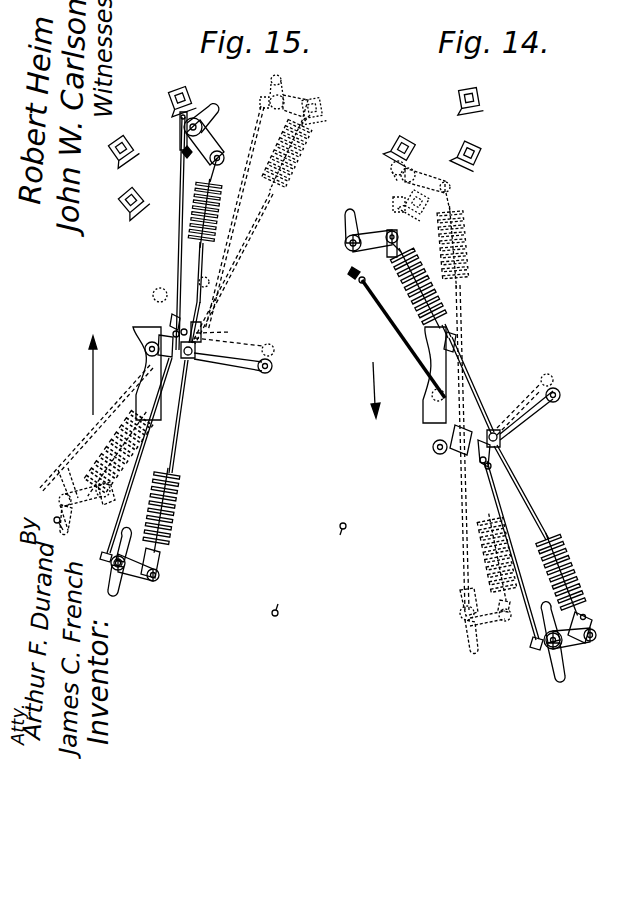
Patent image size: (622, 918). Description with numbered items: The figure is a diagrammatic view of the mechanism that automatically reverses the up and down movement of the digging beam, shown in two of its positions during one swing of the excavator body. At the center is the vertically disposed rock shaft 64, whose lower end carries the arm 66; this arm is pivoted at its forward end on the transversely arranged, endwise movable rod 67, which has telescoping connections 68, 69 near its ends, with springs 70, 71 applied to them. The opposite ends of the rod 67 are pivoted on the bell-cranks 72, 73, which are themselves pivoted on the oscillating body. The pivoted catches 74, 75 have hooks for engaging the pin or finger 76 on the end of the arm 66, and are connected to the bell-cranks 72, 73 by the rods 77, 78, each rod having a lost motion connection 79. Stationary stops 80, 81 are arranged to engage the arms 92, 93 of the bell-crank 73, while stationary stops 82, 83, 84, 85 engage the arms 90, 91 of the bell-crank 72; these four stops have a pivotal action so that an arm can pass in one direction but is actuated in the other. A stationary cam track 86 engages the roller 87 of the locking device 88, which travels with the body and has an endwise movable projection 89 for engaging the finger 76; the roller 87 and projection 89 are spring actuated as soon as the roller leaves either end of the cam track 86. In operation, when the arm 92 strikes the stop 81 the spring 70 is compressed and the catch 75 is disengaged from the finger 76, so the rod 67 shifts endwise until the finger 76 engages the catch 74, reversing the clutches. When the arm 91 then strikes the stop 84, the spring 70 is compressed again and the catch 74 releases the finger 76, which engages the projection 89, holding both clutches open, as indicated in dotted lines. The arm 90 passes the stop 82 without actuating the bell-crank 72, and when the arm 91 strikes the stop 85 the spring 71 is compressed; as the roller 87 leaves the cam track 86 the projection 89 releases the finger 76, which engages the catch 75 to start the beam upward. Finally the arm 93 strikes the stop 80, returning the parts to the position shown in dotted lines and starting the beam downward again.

In FIG. 15, the rock shaft 64 is at (266, 373).
In FIG. 15, the arm 66 is at (243, 363).
In FIG. 15, the rod 67 is at (203, 318).
In FIG. 14, the rod 67 is at (456, 340).
In FIG. 15, the telescoping connection 68 is at (252, 181).
In FIG. 14, the telescoping connection 68 is at (418, 270).
In FIG. 15, the telescoping connection 69 is at (152, 496).
In FIG. 14, the telescoping connection 69 is at (540, 556).
In FIG. 15, the spring 70 is at (137, 467).
In FIG. 14, the spring 70 is at (512, 583).
In FIG. 15, the spring 71 is at (226, 193).
In FIG. 14, the spring 71 is at (415, 252).
In FIG. 15, the bell-crank 72 is at (210, 139).
In FIG. 14, the bell-crank 72 is at (370, 236).
In FIG. 15, the bell-crank 73 is at (147, 566).
In FIG. 14, the bell-crank 73 is at (575, 646).
In FIG. 15, the pivoted catch 74 is at (181, 151).
In FIG. 14, the pivoted catch 74 is at (394, 232).
In FIG. 15, the pivoted catch 75 is at (181, 376).
In FIG. 14, the pivoted catch 75 is at (487, 447).
In FIG. 15, the pin 76 is at (205, 340).
In FIG. 14, the pin 76 is at (479, 381).
In FIG. 15, the rod 77 is at (201, 257).
In FIG. 14, the rod 77 is at (426, 314).
In FIG. 15, the rod 78 is at (116, 425).
In FIG. 14, the rod 78 is at (464, 521).
In FIG. 15, the lost motion connection 79 is at (82, 437).
In FIG. 14, the lost motion connection 79 is at (360, 282).
In FIG. 15, the stationary stop 80 is at (53, 531).
In FIG. 14, the stationary stop 80 is at (342, 536).
In FIG. 15, the stationary stop 81 is at (279, 604).
In FIG. 14, the stationary stop 81 is at (587, 618).
In FIG. 15, the stationary stop 82 is at (129, 152).
In FIG. 14, the stationary stop 82 is at (413, 141).
In FIG. 15, the stationary stop 83 is at (190, 101).
In FIG. 14, the stationary stop 83 is at (480, 100).
In FIG. 15, the stationary stop 84 is at (134, 199).
In FIG. 14, the stationary stop 84 is at (451, 192).
In FIG. 15, the stationary stop 85 is at (187, 156).
In FIG. 14, the stationary stop 85 is at (473, 146).
In FIG. 15, the stationary cam track 86 is at (148, 375).
In FIG. 14, the stationary cam track 86 is at (428, 382).
In FIG. 15, the roller 87 is at (165, 283).
In FIG. 14, the roller 87 is at (432, 396).
In FIG. 15, the locking device 88 is at (158, 352).
In FIG. 14, the locking device 88 is at (432, 418).
In FIG. 15, the projection 89 is at (195, 361).
In FIG. 14, the projection 89 is at (501, 380).
In FIG. 15, the arm 90 is at (218, 110).
In FIG. 14, the arm 90 is at (351, 213).
In FIG. 15, the arm 91 is at (182, 141).
In FIG. 14, the arm 91 is at (395, 206).
In FIG. 15, the arm 92 is at (127, 535).
In FIG. 14, the arm 92 is at (548, 609).
In FIG. 15, the arm 93 is at (120, 591).
In FIG. 14, the arm 93 is at (560, 679).